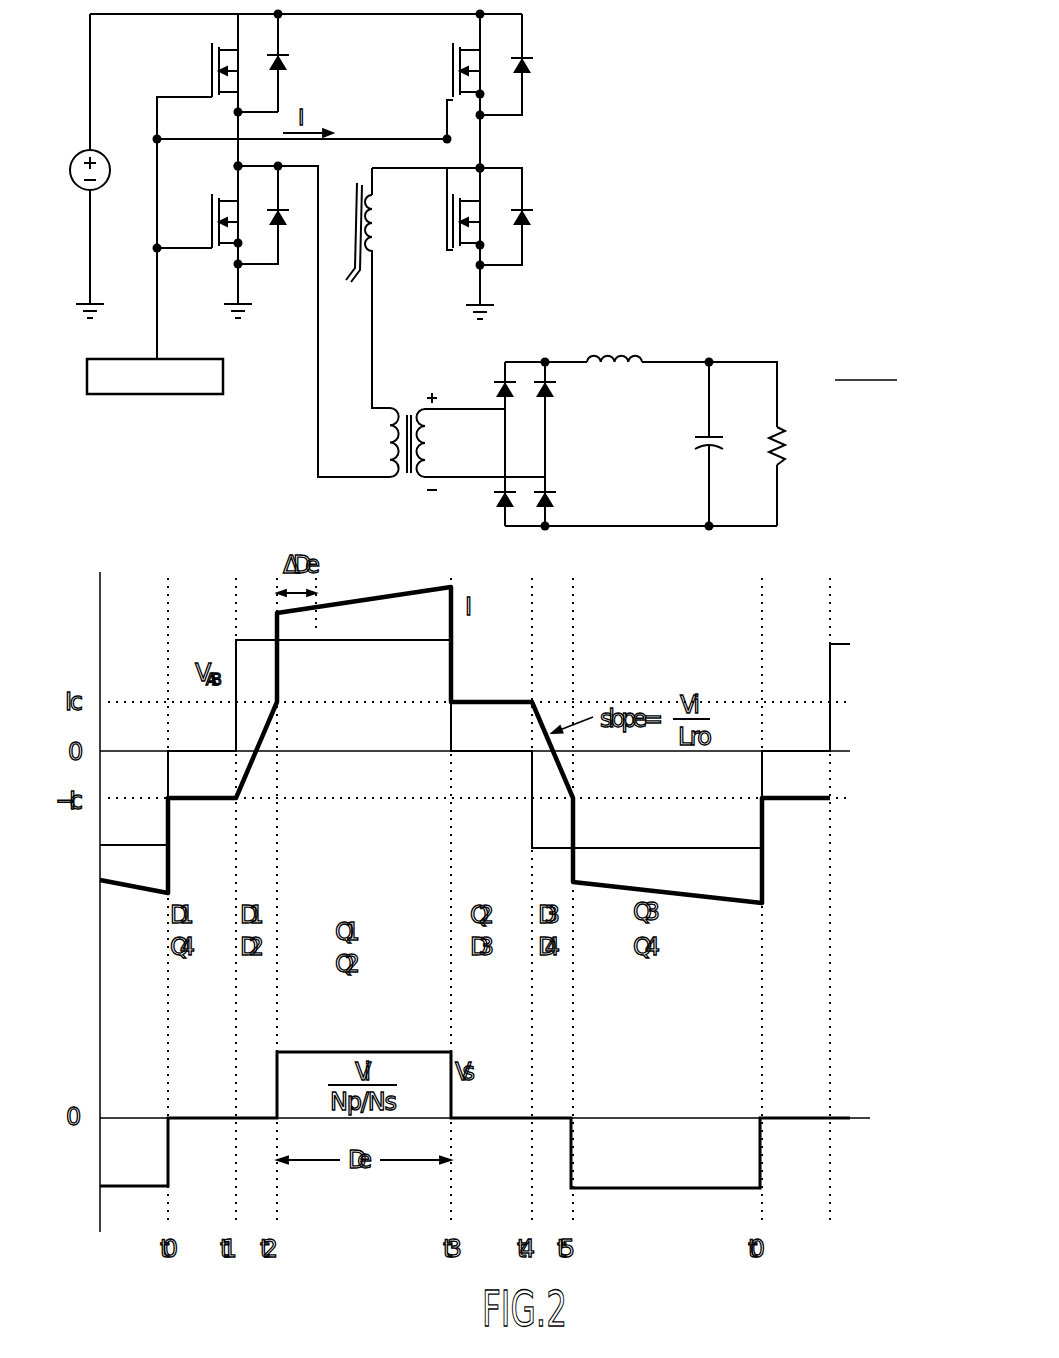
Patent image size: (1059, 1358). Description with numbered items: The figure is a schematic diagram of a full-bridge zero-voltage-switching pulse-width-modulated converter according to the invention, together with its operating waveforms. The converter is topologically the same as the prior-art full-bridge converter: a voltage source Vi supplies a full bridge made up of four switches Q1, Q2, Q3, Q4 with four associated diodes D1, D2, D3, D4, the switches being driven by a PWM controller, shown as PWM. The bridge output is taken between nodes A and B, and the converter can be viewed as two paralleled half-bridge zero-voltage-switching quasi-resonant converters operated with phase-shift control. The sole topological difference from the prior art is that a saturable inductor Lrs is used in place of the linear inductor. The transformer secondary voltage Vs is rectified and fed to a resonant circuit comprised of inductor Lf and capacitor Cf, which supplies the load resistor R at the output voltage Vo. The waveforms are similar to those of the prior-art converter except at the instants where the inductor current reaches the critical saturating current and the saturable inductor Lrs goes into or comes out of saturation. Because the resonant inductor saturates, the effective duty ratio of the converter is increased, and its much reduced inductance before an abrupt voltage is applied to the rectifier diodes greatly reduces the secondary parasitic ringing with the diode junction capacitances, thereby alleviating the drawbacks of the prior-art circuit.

The voltage source Vi is at (75, 160).
The switch Q1 is at (204, 62).
The switch Q2 is at (443, 212).
The switch Q3 is at (204, 211).
The switch Q4 is at (449, 62).
The diode D1 is at (291, 49).
The diode D2 is at (534, 200).
The diode D3 is at (291, 200).
The diode D4 is at (534, 50).
The bridge node A is at (229, 158).
The bridge node B is at (488, 150).
The saturable inductor Lrs is at (376, 232).
The secondary voltage Vs is at (446, 428).
The inductor of resonant circuit Lf is at (614, 345).
The capacitor of resonant circuit Cf is at (715, 430).
The load resistor R is at (812, 446).
The output voltage Vo is at (846, 384).
The PWM controller PWM is at (155, 376).